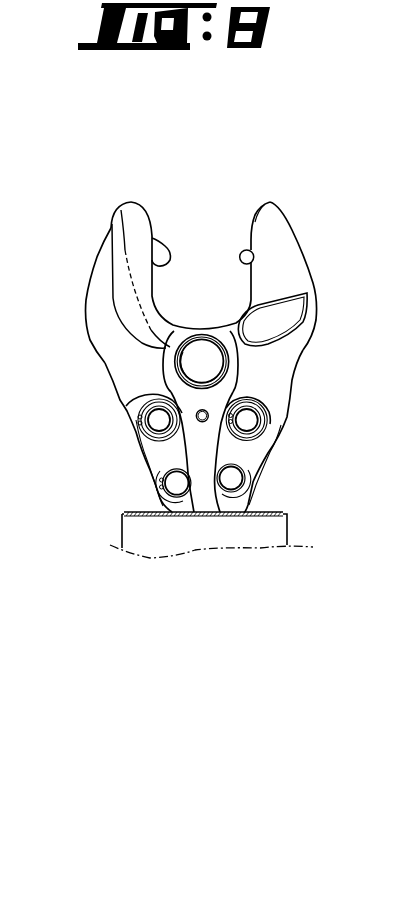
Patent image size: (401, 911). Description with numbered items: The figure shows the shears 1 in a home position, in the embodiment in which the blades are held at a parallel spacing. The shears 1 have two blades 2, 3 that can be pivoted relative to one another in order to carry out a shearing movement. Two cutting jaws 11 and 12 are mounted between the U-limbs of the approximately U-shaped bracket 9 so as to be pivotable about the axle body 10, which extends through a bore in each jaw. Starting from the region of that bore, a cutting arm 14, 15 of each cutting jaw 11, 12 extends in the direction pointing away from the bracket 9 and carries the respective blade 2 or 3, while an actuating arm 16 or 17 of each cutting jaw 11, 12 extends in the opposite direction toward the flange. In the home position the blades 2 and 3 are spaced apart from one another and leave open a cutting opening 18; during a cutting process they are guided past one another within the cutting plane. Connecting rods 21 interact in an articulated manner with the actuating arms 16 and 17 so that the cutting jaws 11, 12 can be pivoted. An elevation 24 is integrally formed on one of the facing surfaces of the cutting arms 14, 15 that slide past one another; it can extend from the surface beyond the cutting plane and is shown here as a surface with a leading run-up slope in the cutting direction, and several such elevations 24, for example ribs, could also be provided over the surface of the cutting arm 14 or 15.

The shears 1 is at (268, 192).
The blade 2 is at (253, 262).
The blade 3 is at (168, 253).
The bracket 9 is at (193, 482).
The axle body 10 is at (188, 369).
The cutting jaw 11 is at (266, 355).
The cutting jaw 12 is at (109, 325).
The cutting arm 14 is at (282, 262).
The cutting arm 15 is at (101, 263).
The actuating arm 16 is at (262, 387).
The actuating arm 17 is at (130, 402).
The cutting opening 18 is at (205, 240).
The connecting rod 21 is at (162, 450).
The elevation 24 is at (272, 320).